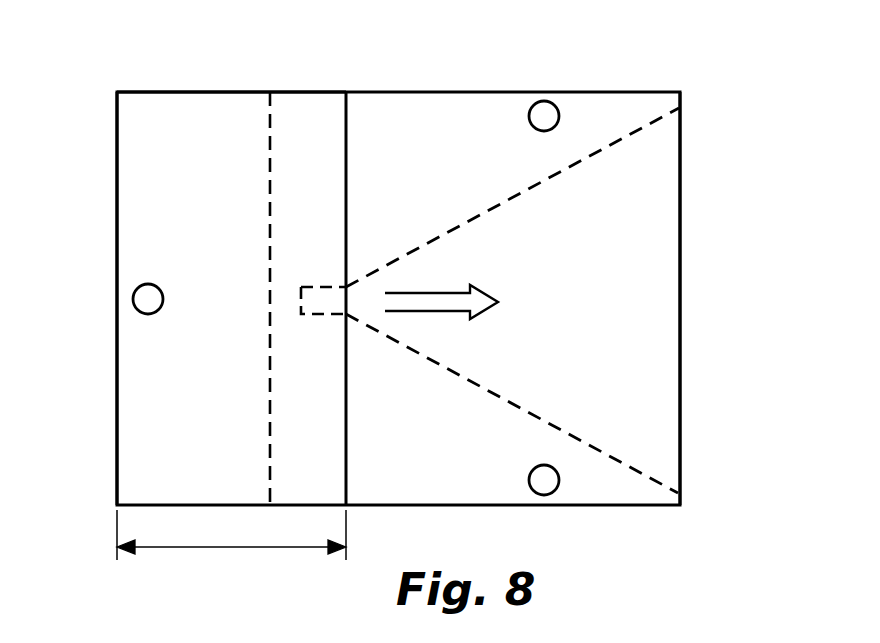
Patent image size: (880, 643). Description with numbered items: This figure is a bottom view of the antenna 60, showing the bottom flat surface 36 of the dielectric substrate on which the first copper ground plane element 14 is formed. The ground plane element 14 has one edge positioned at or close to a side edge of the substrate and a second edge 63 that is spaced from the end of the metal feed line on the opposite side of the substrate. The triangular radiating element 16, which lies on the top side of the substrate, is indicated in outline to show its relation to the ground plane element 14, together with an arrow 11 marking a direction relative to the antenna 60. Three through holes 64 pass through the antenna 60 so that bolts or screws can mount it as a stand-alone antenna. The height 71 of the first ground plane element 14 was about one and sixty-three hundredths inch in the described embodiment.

The antenna 60 is at (100, 114).
The first ground plane element 14 is at (187, 133).
The second edge 63 is at (272, 384).
The bottom flat surface 36 is at (437, 458).
The radiating element 16 is at (645, 287).
The direction of flow arrow 11 is at (450, 293).
The through holes 64 is at (133, 300).
The height of first ground plane element 71 is at (226, 548).